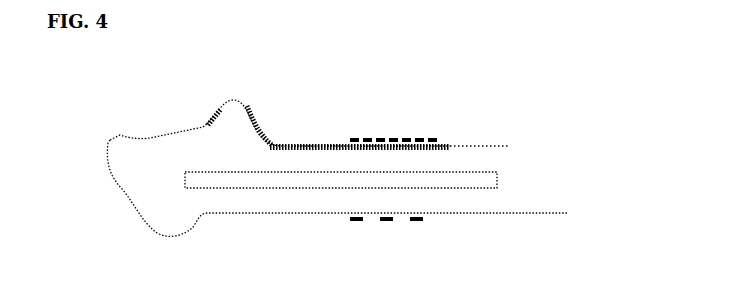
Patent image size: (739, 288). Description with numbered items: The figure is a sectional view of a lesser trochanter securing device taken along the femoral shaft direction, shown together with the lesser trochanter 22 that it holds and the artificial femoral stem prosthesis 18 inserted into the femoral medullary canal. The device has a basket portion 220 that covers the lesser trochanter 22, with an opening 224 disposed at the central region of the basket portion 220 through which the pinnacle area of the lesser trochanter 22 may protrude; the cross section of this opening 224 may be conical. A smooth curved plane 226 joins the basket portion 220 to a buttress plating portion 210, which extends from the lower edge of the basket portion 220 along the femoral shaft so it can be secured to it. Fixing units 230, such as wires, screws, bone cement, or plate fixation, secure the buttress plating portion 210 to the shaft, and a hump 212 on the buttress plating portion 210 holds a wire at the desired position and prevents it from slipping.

The housing body 22 is at (110, 140).
The basket portion 220 is at (213, 112).
The opening 224 is at (255, 100).
The smooth curved plane 226 is at (265, 132).
The buttress plating portion 210 is at (317, 143).
The fixing unit 230 is at (378, 140).
The hump 212 is at (430, 138).
The artificial femoral stem prosthesis 18 is at (436, 188).